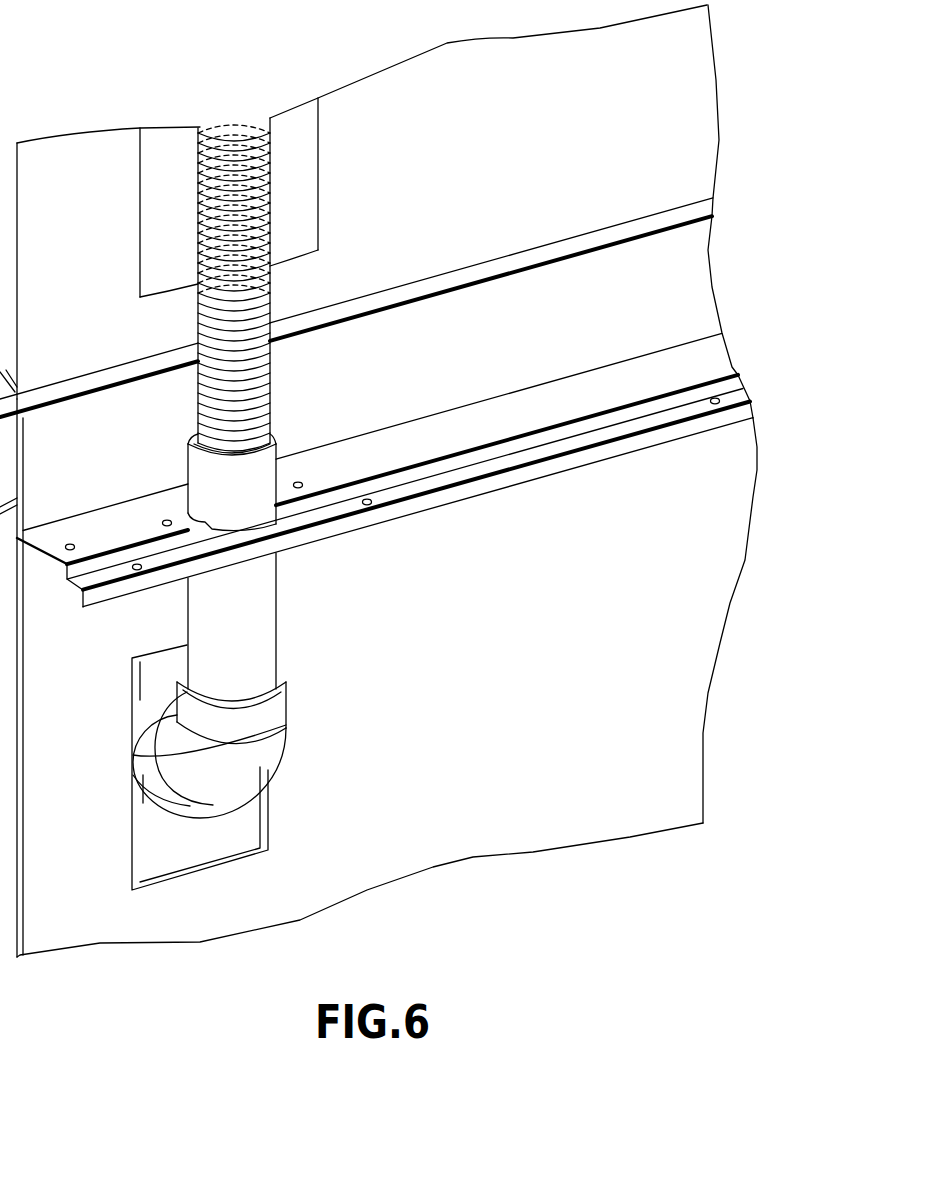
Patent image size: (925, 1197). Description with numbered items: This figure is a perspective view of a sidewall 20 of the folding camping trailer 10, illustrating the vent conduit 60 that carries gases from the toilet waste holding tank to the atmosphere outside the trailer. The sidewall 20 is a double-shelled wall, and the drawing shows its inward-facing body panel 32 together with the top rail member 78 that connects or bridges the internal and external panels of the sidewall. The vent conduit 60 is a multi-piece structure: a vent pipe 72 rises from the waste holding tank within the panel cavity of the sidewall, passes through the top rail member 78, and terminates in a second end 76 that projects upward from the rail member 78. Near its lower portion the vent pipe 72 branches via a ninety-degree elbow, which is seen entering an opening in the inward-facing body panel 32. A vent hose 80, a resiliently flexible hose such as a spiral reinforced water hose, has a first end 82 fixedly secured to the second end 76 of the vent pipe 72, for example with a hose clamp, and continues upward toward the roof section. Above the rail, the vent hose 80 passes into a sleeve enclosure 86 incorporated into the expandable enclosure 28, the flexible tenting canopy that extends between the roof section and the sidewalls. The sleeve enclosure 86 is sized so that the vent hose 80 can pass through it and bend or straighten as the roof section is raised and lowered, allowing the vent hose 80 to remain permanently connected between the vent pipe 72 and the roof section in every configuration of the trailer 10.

The folding camping trailer 10 is at (167, 75).
The sidewall 20 is at (762, 585).
The expandable enclosure 28 is at (692, 123).
The inward-facing body panel 32 is at (718, 490).
The vent conduit 60 is at (160, 323).
The vent pipe 72 is at (253, 640).
The second end 76 is at (276, 428).
The top rail member 78 is at (518, 413).
The vent hose 80 is at (240, 318).
The first end 82 is at (192, 441).
The sleeve enclosure 86 is at (297, 173).